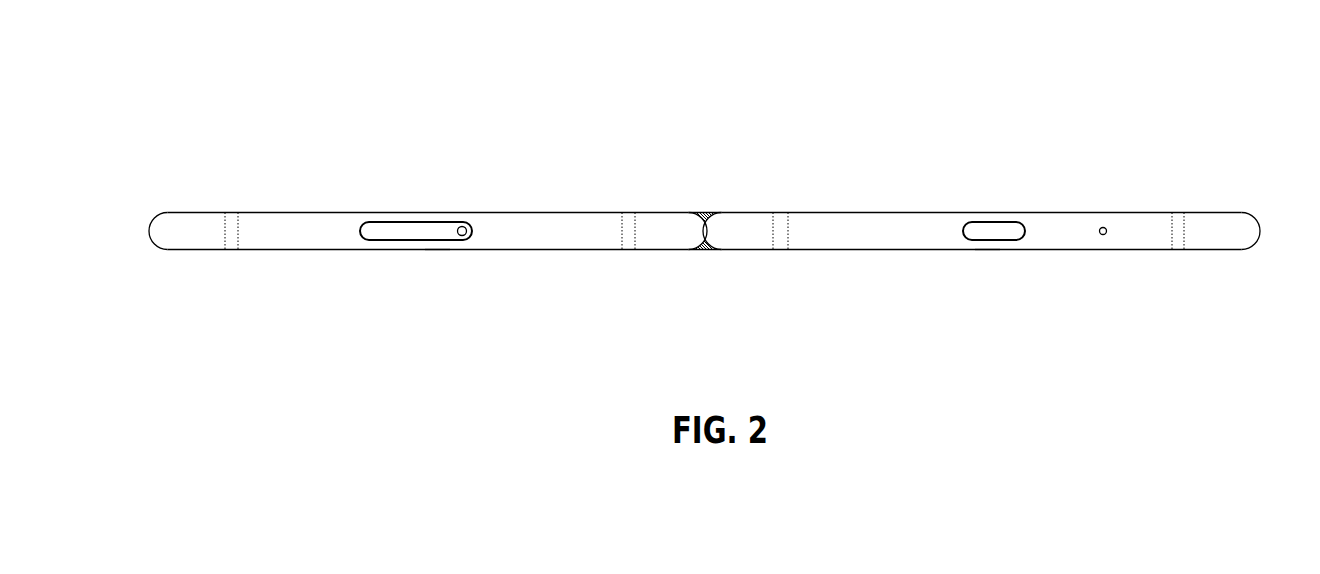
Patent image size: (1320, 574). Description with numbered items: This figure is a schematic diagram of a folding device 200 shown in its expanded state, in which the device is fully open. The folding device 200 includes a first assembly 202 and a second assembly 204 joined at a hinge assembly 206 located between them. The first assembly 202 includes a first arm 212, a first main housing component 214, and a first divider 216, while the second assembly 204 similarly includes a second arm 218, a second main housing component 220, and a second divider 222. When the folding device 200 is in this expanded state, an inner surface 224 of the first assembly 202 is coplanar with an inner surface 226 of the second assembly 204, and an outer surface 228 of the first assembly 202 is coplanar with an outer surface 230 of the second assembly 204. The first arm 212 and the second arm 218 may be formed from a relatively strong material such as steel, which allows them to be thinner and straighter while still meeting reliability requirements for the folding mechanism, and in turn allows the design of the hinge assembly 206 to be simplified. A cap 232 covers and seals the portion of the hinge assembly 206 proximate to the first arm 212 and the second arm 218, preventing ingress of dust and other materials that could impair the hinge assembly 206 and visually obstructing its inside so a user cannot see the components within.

The folding device 200 is at (1054, 98).
The first assembly 202 is at (250, 284).
The second assembly 204 is at (1162, 287).
The hinge assembly 206 is at (646, 166).
The first arm 212 is at (665, 250).
The first main housing component 214 is at (166, 236).
The first divider 216 is at (628, 212).
The second arm 218 is at (745, 250).
The second main housing component 220 is at (1235, 240).
The second divider 222 is at (782, 212).
The inner surface of first assembly 224 is at (420, 212).
The inner surface of second assembly 226 is at (988, 212).
The outer surface of first assembly 228 is at (437, 250).
The outer surface of second assembly 230 is at (985, 250).
The cap 232 is at (710, 212).